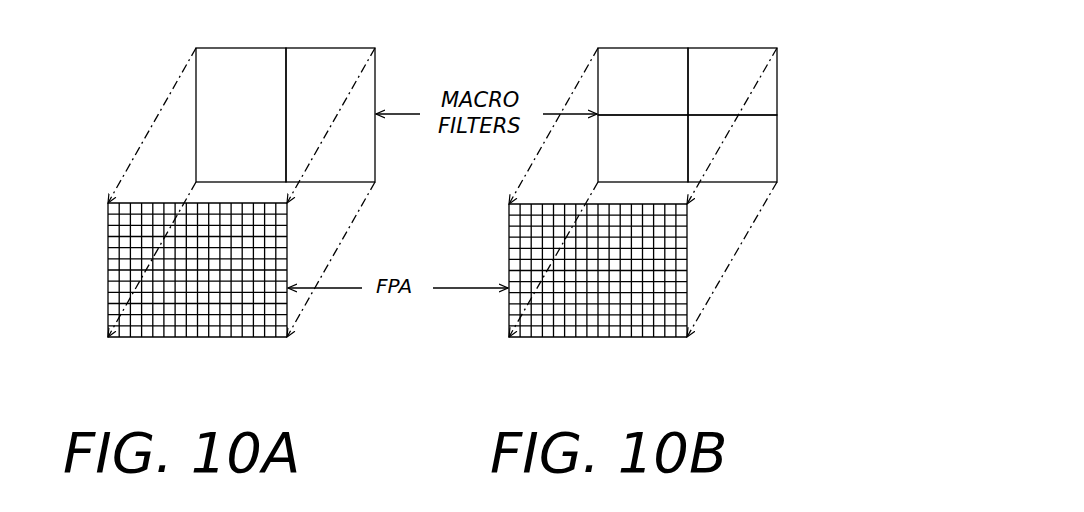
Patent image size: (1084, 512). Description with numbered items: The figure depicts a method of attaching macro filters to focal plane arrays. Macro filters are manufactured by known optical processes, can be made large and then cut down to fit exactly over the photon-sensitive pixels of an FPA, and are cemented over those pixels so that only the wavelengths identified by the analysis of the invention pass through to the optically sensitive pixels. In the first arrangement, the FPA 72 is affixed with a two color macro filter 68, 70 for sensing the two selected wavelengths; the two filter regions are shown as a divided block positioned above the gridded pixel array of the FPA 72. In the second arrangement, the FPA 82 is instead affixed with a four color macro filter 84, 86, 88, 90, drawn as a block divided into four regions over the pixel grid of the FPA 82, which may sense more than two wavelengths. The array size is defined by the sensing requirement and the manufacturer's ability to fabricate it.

In FIG. 10A, the macro filter 68 is at (212, 48).
In FIG. 10A, the macro filter 70 is at (324, 48).
In FIG. 10A, the Focal Plane Array (FPA) 72 is at (108, 278).
In FIG. 10B, the FPA 82 is at (652, 338).
In FIG. 10B, the macro filter 84 is at (777, 85).
In FIG. 10B, the macro filter 86 is at (777, 140).
In FIG. 10B, the macro filter 88 is at (598, 72).
In FIG. 10B, the macro filter 90 is at (598, 145).